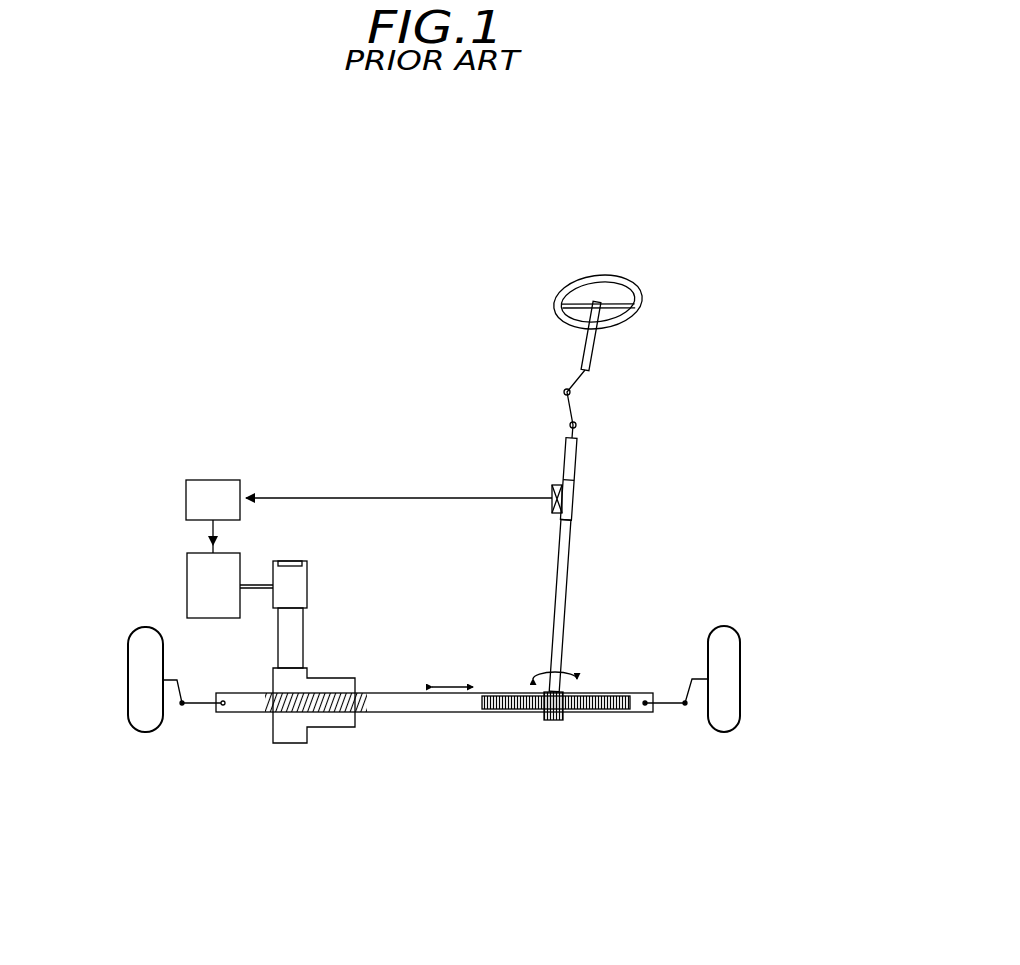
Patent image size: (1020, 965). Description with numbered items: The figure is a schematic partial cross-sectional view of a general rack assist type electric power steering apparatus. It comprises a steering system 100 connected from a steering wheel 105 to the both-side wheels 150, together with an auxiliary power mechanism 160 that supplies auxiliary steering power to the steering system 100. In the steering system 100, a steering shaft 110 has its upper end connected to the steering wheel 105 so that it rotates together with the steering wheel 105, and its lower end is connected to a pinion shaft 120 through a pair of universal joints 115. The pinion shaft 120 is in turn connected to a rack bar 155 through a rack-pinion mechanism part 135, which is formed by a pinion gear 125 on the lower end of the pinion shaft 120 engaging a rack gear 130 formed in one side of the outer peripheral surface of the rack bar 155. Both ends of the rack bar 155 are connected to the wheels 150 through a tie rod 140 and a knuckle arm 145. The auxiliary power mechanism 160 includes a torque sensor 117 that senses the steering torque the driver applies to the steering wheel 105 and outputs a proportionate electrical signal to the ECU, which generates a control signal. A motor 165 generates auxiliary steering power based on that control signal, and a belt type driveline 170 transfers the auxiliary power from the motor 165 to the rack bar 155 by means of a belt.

The steering system 100 is at (637, 276).
The steering wheel 105 is at (554, 293).
The steering shaft 110 is at (597, 342).
The universal joints 115 is at (577, 426).
The torque sensor 117 is at (558, 486).
The pinion shaft 120 is at (573, 542).
The pinion gear 125 is at (555, 720).
The rack gear 130 is at (600, 712).
The rack-pinion mechanism part 135 is at (555, 775).
The tie rod 140 is at (668, 707).
The knuckle arm 145 is at (687, 688).
The wheels 150 is at (137, 655).
The rack bar 155 is at (446, 712).
The auxiliary power mechanism 160 is at (324, 439).
The motor 165 is at (186, 562).
The belt type driveline 170 is at (308, 624).